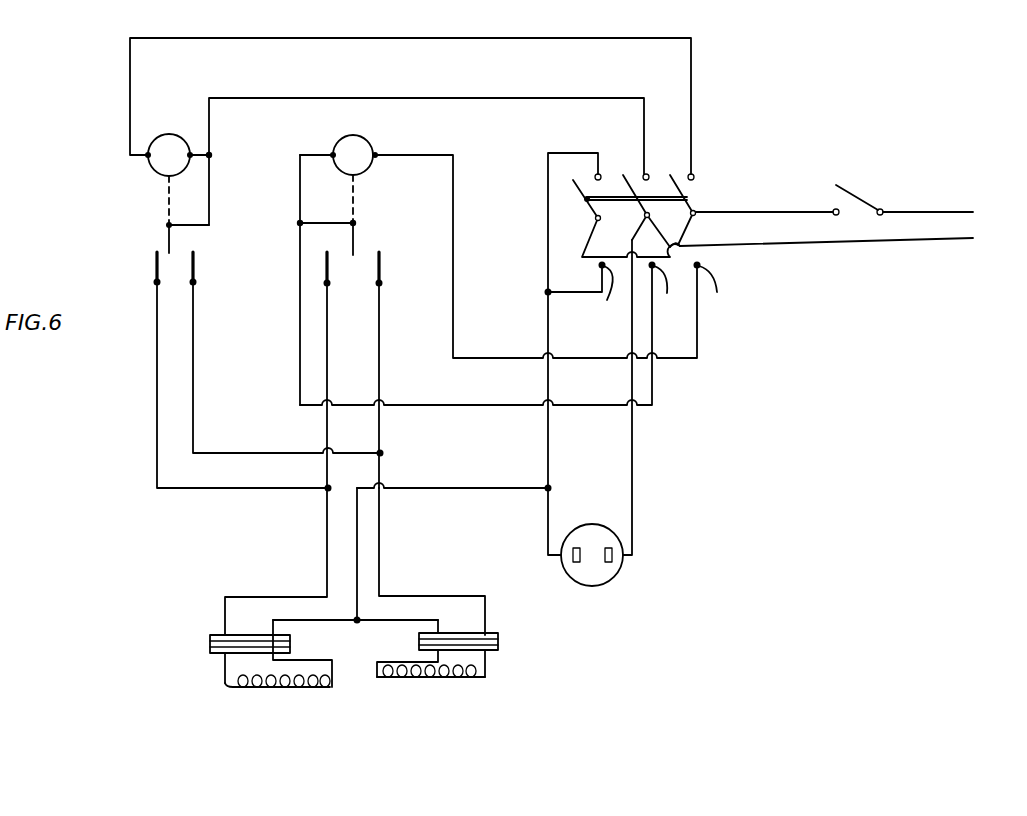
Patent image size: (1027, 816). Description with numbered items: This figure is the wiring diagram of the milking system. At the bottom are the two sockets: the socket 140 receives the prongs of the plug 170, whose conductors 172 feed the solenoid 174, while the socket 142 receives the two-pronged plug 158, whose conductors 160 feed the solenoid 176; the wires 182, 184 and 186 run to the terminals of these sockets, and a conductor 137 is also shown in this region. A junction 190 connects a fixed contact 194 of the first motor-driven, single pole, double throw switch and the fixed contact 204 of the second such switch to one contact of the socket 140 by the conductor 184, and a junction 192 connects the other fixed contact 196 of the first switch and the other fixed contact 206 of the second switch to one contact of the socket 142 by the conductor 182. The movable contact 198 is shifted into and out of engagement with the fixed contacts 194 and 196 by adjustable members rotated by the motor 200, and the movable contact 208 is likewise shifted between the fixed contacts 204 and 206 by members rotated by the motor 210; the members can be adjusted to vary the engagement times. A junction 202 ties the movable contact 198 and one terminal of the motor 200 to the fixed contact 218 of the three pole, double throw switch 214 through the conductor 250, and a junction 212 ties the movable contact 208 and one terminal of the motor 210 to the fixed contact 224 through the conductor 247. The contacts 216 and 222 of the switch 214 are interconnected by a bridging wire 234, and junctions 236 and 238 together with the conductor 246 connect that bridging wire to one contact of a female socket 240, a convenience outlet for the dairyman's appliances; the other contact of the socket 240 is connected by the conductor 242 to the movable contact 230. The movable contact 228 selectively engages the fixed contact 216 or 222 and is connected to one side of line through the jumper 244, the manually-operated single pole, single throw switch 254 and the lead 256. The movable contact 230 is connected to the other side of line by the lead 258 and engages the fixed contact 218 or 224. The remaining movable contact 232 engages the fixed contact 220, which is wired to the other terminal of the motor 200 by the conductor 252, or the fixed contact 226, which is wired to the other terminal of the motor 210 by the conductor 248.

The conductor 137 is at (355, 624).
The socket 140 is at (222, 633).
The socket 142 is at (497, 632).
The two-pronged plug 158 is at (498, 652).
The conductors 160 is at (418, 662).
The plug 170 is at (210, 655).
The conductors 172 is at (222, 686).
The solenoid 174 is at (275, 690).
The solenoid 176 is at (428, 690).
The conductor 182 is at (441, 595).
The conductor 184 is at (272, 572).
The wire 186 is at (355, 598).
The junction 190 is at (327, 490).
The junction 192 is at (383, 452).
The fixed contact 194 is at (152, 267).
The fixed contact 196 is at (197, 268).
The movable contact 198 is at (167, 235).
The motor 200 is at (153, 175).
The junction 202 is at (212, 155).
The fixed contact 204 is at (330, 267).
The fixed contact 206 is at (383, 267).
The movable contact 208 is at (356, 229).
The motor 210 is at (370, 167).
The junction 212 is at (298, 224).
The three pole, double throw switch 214 is at (745, 203).
The fixed contact 216 is at (601, 172).
The fixed contact 218 is at (649, 172).
The fixed contact 220 is at (694, 173).
The fixed contact 222 is at (601, 298).
The fixed contact 224 is at (676, 290).
The fixed contact 226 is at (728, 290).
The movable contact 228 is at (583, 207).
The movable contact 230 is at (642, 210).
The movable contact 232 is at (706, 210).
The bridging wire 234 is at (548, 195).
The junction 236 is at (547, 292).
The junction 238 is at (546, 490).
The female socket 240 is at (617, 577).
The conductor 242 is at (634, 478).
The jumper 244 is at (690, 251).
The conductor 246 is at (548, 323).
The conductor 247 is at (654, 385).
The conductor 248 is at (698, 340).
The conductor 250 is at (400, 96).
The conductor 252 is at (693, 75).
The manually-operated switch 254 is at (870, 205).
The lead 256 is at (962, 207).
The lead 258 is at (917, 240).